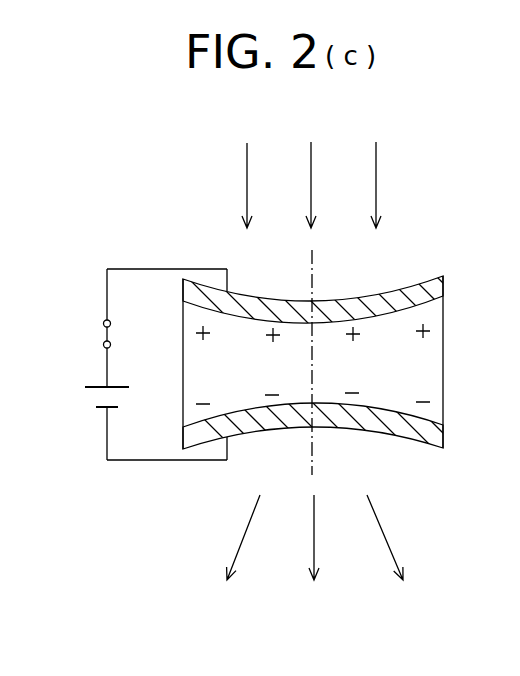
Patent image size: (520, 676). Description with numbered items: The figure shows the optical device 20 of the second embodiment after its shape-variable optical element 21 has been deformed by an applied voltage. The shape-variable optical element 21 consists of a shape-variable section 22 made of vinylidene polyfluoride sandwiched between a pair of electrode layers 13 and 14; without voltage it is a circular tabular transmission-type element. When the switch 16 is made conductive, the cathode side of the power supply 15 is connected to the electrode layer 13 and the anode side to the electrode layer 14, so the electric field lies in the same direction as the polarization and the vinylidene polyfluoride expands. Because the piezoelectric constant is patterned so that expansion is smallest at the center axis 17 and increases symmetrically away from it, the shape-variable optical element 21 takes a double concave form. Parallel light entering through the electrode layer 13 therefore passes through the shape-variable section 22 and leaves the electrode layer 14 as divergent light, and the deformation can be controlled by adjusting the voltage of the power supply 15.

The electrode layer 13 is at (442, 288).
The electrode layer 14 is at (447, 436).
The power supply 15 is at (90, 398).
The switch 16 is at (101, 332).
The center axis 17 is at (312, 262).
The optical device 20 is at (187, 181).
The shape-variable optical element 21 is at (414, 260).
The shape-variable section 22 is at (432, 354).